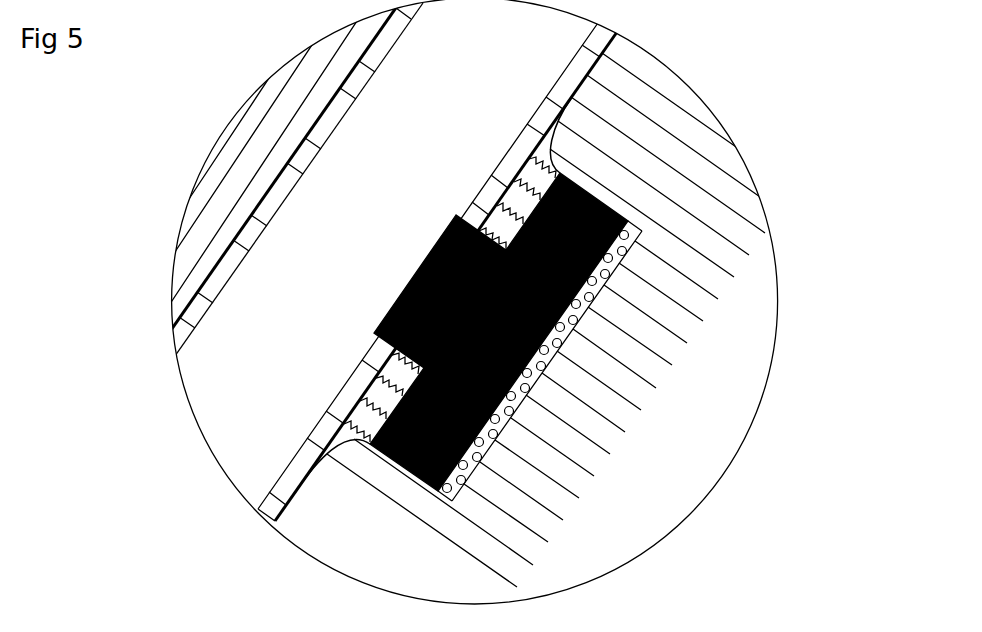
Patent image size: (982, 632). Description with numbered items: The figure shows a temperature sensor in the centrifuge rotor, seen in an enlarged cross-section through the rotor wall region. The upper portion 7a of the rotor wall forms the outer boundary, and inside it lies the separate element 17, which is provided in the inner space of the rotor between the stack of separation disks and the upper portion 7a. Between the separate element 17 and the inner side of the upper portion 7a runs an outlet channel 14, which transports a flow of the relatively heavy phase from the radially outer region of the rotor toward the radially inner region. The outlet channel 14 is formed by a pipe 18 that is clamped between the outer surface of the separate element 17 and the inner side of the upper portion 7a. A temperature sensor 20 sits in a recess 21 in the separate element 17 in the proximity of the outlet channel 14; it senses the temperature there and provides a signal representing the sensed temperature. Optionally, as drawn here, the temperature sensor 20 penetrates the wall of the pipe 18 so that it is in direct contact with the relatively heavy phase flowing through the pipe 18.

The upper portion of the rotor wall 7a is at (245, 127).
The outlet channel 14 is at (449, 139).
The separate element 17 is at (675, 480).
The pipe 18 is at (253, 235).
The temperature sensor 20 is at (384, 310).
The recess 21 is at (627, 250).